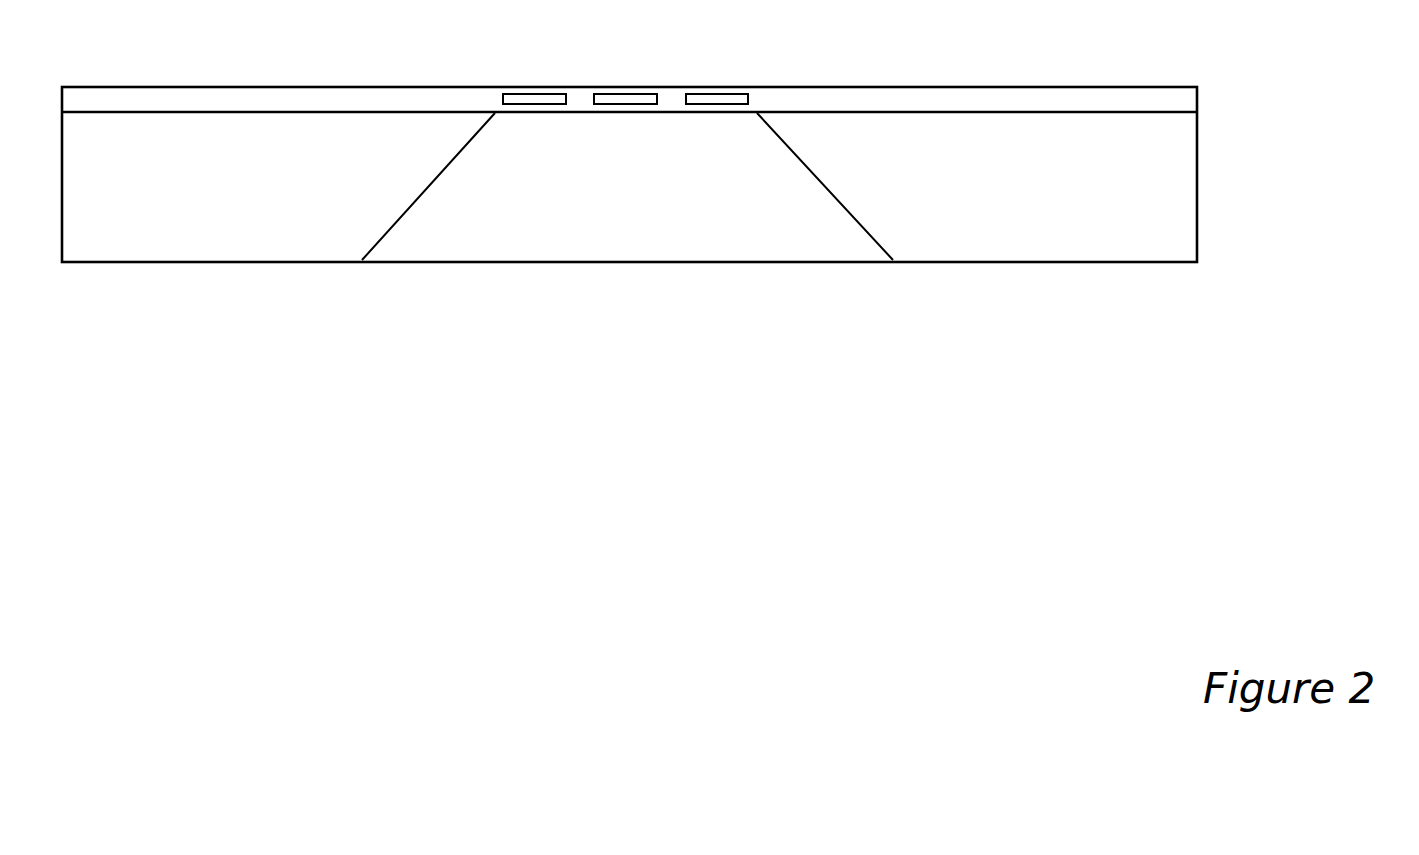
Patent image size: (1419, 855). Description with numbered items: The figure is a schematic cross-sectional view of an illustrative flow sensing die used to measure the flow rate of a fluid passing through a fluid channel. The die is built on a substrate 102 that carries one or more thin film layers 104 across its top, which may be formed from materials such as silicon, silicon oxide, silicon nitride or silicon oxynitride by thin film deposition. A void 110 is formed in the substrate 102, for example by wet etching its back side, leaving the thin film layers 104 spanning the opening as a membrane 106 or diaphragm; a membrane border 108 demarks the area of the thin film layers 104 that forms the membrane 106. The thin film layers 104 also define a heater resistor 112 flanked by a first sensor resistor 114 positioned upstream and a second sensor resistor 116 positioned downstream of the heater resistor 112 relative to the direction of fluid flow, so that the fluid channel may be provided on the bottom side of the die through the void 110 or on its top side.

The substrate 102 is at (1186, 188).
The thin film layers 104 is at (1186, 100).
The membrane 106 is at (580, 95).
The membrane border 108 is at (757, 113).
The void 110 is at (723, 227).
The heater resistor 112 is at (617, 104).
The first sensor resistor 114 is at (533, 96).
The second sensor resistor 116 is at (719, 104).